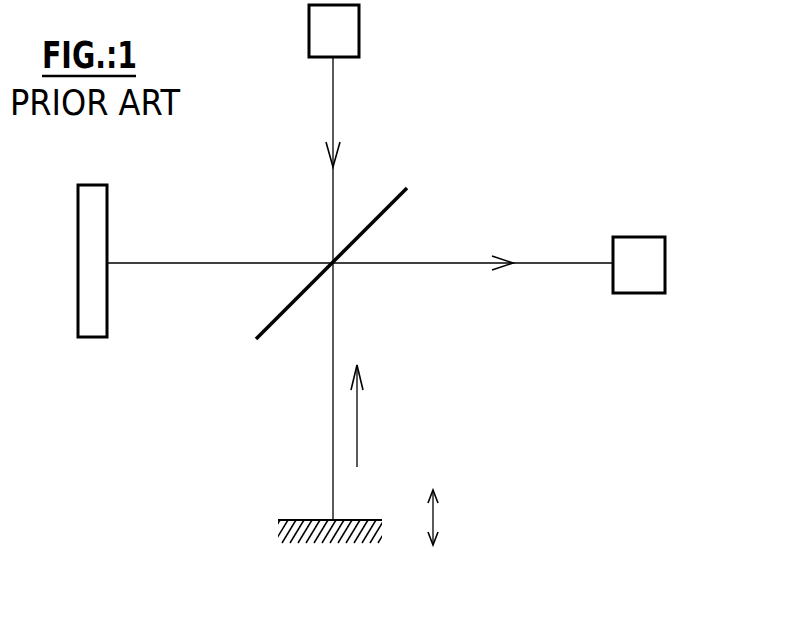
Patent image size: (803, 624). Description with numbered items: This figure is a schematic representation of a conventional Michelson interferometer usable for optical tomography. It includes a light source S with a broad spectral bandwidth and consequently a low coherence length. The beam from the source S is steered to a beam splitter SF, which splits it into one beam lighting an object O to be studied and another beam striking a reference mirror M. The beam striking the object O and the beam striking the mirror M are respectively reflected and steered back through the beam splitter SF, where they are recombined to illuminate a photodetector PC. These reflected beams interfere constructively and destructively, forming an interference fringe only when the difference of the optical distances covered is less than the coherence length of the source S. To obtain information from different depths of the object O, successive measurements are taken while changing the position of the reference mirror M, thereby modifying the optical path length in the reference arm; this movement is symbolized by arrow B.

The light source S is at (350, 35).
The beam splitter SF is at (389, 206).
The photodetector PC is at (643, 262).
The object O is at (95, 323).
The reference mirror M is at (366, 520).
The arrow B is at (435, 514).